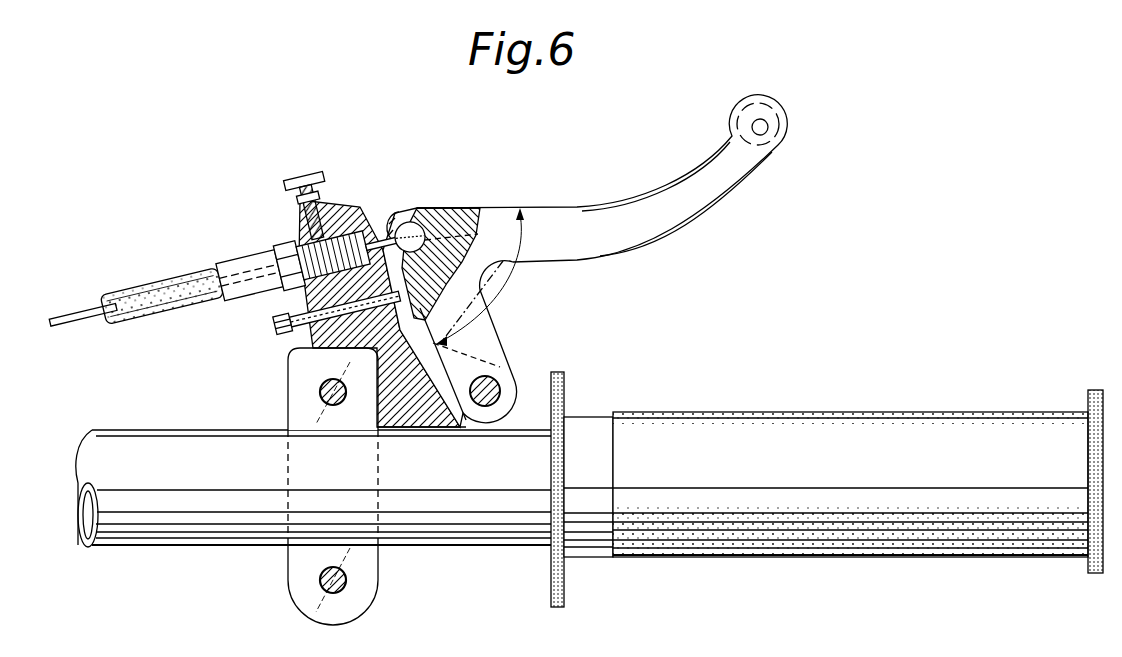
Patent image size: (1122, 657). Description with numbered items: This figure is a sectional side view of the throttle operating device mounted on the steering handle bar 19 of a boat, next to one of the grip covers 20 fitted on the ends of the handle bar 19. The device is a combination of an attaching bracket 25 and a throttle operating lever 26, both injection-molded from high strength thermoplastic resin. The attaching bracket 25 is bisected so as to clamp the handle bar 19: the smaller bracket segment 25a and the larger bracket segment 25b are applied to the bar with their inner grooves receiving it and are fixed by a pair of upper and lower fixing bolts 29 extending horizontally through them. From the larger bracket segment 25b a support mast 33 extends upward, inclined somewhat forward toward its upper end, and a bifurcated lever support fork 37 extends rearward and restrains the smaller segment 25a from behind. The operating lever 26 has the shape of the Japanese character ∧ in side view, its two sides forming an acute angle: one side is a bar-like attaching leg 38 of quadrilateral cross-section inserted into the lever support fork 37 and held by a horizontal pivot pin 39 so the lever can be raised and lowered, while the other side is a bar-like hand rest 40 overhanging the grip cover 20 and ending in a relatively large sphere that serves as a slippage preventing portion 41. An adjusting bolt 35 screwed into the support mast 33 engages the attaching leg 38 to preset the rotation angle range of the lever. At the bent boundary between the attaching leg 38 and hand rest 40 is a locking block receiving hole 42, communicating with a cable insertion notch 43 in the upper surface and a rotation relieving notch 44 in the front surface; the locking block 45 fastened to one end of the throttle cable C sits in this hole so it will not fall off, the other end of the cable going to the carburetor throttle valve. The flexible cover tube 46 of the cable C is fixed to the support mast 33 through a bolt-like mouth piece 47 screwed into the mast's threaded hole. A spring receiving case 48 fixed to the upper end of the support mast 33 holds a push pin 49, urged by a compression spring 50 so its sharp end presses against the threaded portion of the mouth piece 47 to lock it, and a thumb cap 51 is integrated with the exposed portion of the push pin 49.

The steering handle bar 19 is at (197, 547).
The grip cover 20 is at (792, 432).
The attaching bracket 25 is at (284, 573).
The bracket segment 25a is at (289, 403).
The bracket segment 25b is at (413, 410).
The throttle operating lever 26 is at (585, 268).
The fixing bolt 29 is at (335, 405).
The support mast 33 is at (282, 309).
The adjusting bolt 35 is at (273, 332).
The lever support fork 37 is at (458, 418).
The attaching leg 38 is at (494, 343).
The pivot pin 39 is at (500, 389).
The hand rest 40 is at (630, 206).
The slippage preventing portion 41 is at (751, 112).
The locking block receiving hole 42 is at (459, 264).
The cable insertion notch 43 is at (409, 220).
The rotation relieving notch 44 is at (396, 222).
The locking block 45 is at (419, 212).
The flexible cover tube 46 is at (163, 283).
The mouth piece 47 is at (233, 267).
The spring receiving case 48 is at (330, 200).
The push pin 49 is at (306, 197).
The compression spring 50 is at (293, 228).
The thumb cap 51 is at (320, 175).
The throttle cable C is at (75, 313).